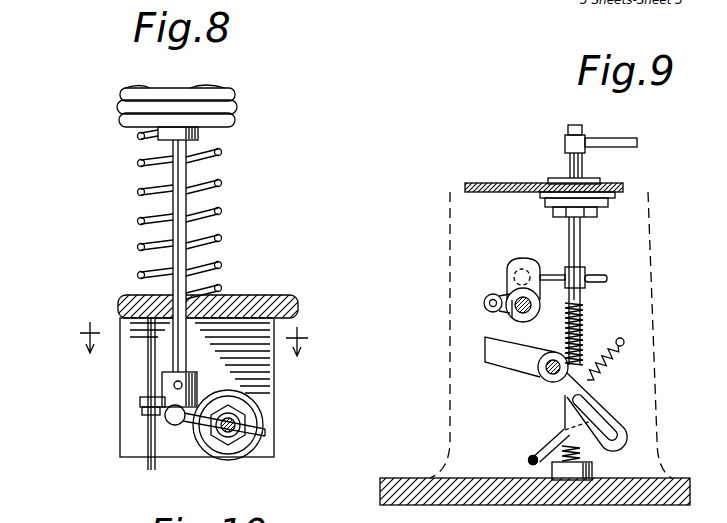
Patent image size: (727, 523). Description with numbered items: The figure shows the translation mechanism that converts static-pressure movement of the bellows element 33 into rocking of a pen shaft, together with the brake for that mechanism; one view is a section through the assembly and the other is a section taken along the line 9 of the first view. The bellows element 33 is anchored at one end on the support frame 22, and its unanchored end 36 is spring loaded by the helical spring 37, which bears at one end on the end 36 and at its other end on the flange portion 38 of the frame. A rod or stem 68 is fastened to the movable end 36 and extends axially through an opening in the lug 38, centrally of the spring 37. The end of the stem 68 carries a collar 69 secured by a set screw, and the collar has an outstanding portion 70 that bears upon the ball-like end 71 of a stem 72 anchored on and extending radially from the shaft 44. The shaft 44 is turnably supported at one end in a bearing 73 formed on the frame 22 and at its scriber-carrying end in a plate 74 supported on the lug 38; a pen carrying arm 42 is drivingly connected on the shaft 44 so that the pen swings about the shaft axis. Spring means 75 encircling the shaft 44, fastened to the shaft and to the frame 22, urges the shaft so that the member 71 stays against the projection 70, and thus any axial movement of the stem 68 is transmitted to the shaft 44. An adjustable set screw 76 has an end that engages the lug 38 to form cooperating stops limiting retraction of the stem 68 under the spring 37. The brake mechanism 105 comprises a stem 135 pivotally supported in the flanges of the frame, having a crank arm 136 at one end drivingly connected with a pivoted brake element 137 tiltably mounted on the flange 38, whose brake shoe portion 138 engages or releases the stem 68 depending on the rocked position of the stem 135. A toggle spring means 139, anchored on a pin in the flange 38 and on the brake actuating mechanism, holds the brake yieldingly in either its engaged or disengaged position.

In FIG. 8, the bellows element 33 is at (237, 98).
In FIG. 8, the unanchored end of the bellows 36 is at (167, 130).
In FIG. 8, the helical spring 37 is at (223, 183).
In FIG. 8, the flange portion 38 is at (260, 300).
In FIG. 9, the flange portion 38 is at (650, 278).
In FIG. 8, the rod or stem 68 is at (180, 230).
In FIG. 9, the rod or stem 68 is at (512, 313).
In FIG. 8, the plate 74 is at (273, 407).
In FIG. 9, the plate 74 is at (498, 187).
In FIG. 8, the adjustable set screw 76 is at (150, 370).
In FIG. 9, the adjustable set screw 76 is at (490, 297).
In FIG. 8, the ball-like end 71 is at (175, 425).
In FIG. 9, the ball-like end 71 is at (527, 265).
In FIG. 8, the shaft 44 is at (230, 437).
In FIG. 9, the shaft 44 is at (577, 242).
In FIG. 8, the section line 9— 9 is at (190, 344).
In FIG. 9, the support frame 22 is at (480, 488).
In FIG. 9, the pen carrying arm 42 is at (613, 140).
In FIG. 9, the outstanding portion 70 is at (512, 263).
In FIG. 9, the stem 72 is at (613, 272).
In FIG. 9, the spring means 75 is at (587, 323).
In FIG. 9, the collar 69 is at (523, 317).
In FIG. 9, the brake mechanism 105 is at (448, 359).
In FIG. 9, the brake shoe portion 138 is at (503, 355).
In FIG. 9, the pivoted brake element 137 is at (565, 392).
In FIG. 9, the crank arm 136 is at (597, 420).
In FIG. 9, the stem 135 is at (528, 455).
In FIG. 9, the toggle spring means 139 is at (610, 377).
In FIG. 9, the bearing 73 is at (592, 472).